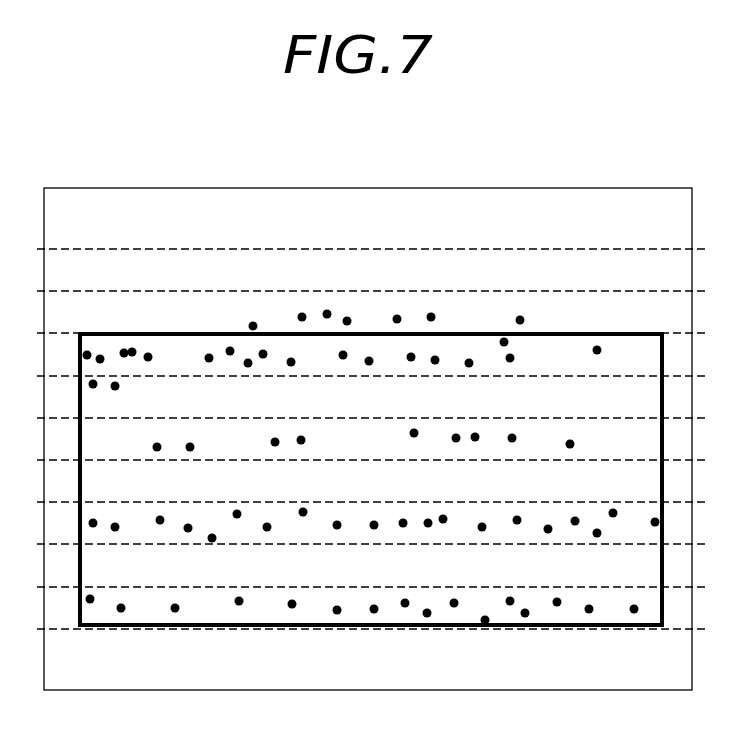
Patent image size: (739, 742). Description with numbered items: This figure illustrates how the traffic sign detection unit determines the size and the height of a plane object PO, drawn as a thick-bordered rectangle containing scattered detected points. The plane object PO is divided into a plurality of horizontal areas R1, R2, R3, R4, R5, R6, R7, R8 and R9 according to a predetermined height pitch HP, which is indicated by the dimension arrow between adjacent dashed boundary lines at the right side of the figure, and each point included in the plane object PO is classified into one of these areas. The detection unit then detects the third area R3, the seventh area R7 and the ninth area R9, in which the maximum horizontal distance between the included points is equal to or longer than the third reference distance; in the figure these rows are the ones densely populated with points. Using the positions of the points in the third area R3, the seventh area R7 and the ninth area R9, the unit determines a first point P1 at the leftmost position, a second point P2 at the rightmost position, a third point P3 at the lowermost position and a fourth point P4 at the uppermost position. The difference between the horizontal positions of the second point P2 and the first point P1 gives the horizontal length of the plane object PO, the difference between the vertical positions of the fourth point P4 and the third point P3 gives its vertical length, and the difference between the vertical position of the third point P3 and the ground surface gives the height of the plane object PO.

The plane object PO is at (188, 334).
The first point P1 is at (89, 349).
The second point P2 is at (653, 518).
The third point P3 is at (485, 625).
The fourth point P4 is at (501, 338).
The height pitch HP is at (701, 249).
The first area R1 is at (356, 270).
The second area R2 is at (356, 317).
The third area R3 is at (356, 360).
The fourth area R4 is at (356, 402).
The fifth area R5 is at (356, 444).
The sixth area R6 is at (356, 486).
The seventh area R7 is at (356, 528).
The eighth area R8 is at (356, 571).
The ninth area R9 is at (356, 613).